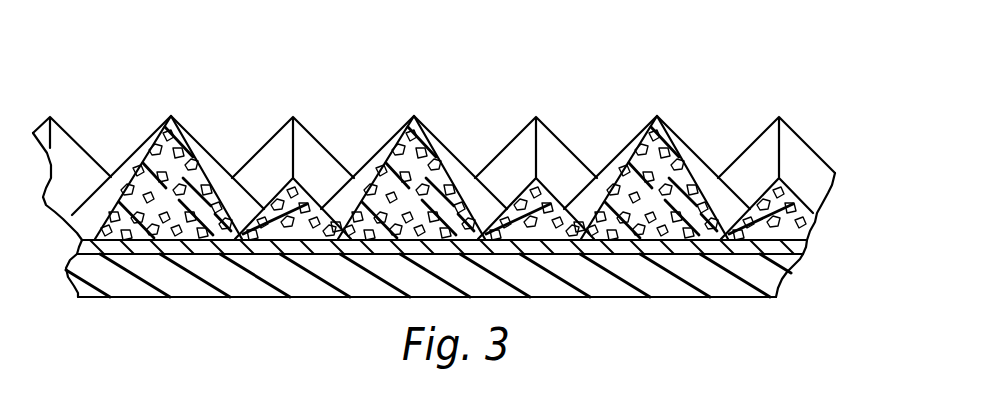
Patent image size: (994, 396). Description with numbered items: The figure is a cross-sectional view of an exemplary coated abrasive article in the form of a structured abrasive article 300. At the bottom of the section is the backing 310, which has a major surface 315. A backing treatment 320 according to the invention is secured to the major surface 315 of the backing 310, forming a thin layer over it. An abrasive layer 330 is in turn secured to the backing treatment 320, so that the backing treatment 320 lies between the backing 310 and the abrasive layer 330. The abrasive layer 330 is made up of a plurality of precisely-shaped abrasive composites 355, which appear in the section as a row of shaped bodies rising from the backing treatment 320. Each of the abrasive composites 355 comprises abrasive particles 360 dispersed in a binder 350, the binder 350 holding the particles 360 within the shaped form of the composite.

The structured abrasive article 300 is at (658, 91).
The backing 310 is at (778, 290).
The major surface 315 is at (800, 264).
The backing treatment 320 is at (808, 239).
The abrasive layer 330 is at (835, 162).
The binder 350 is at (408, 150).
The precisely-shaped abrasive composites 355 is at (455, 153).
The abrasive particles 360 is at (700, 196).